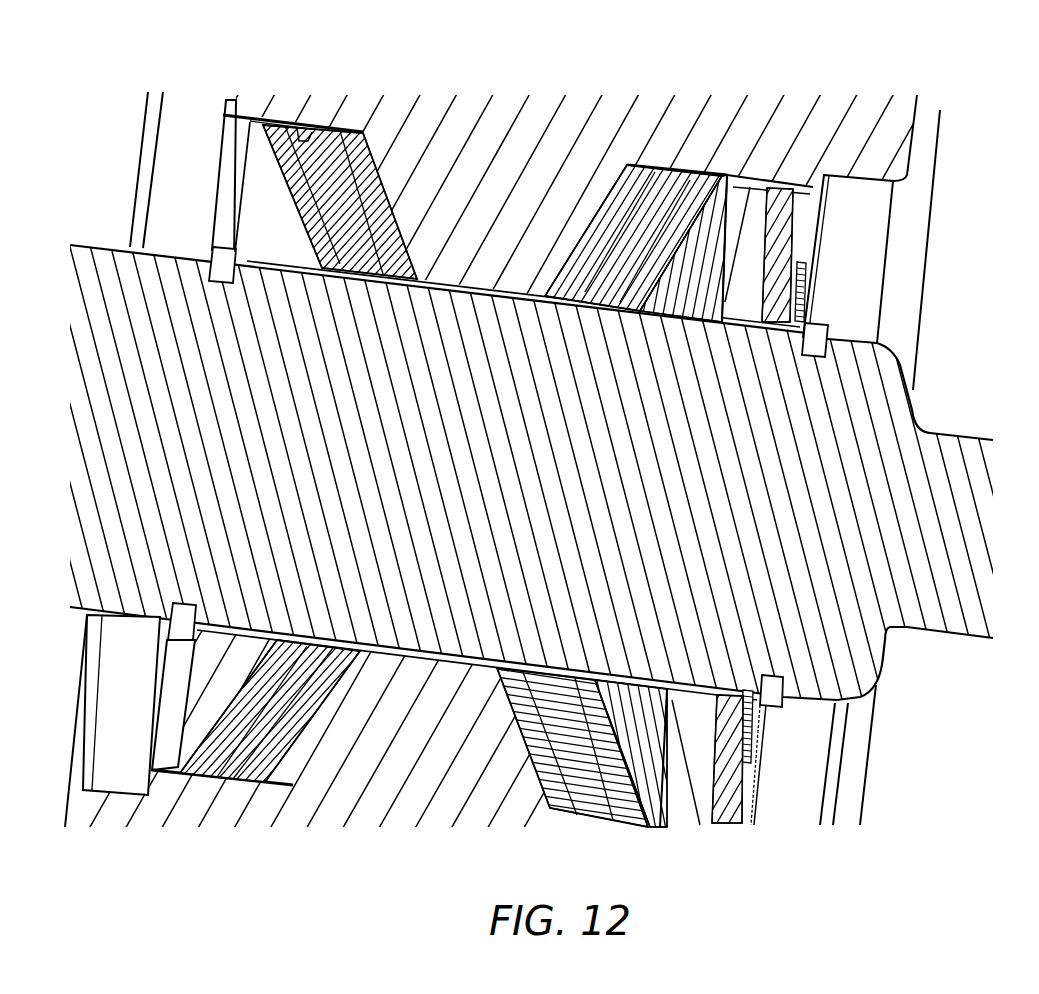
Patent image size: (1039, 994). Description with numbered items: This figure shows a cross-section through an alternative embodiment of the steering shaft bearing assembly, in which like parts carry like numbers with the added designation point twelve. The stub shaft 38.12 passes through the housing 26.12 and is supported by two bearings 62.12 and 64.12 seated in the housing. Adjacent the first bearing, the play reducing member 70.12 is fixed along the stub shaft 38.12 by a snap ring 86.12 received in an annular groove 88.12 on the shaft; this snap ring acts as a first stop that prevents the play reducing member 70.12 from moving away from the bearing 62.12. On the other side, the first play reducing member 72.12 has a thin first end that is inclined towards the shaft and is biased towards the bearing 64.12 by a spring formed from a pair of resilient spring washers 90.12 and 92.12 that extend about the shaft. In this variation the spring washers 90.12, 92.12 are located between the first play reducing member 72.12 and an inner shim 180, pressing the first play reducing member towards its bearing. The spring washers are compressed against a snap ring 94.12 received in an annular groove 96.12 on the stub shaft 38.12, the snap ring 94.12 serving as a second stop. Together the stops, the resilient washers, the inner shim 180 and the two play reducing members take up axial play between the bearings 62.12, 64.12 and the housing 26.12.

The housing 26.12 is at (303, 790).
The stub shaft 38.12 is at (438, 612).
The bearing 62.12 is at (318, 106).
The bearing 64.12 is at (672, 156).
The play reducing member 70.12 is at (262, 113).
The first play reducing member 72.12 is at (738, 178).
The snap ring 86.12 is at (238, 277).
The annular groove 88.12 is at (223, 283).
The spring washer 90.12 is at (733, 313).
The spring washer 92.12 is at (782, 312).
The snap ring 94.12 is at (825, 342).
The annular groove 96.12 is at (817, 357).
The inner shim 180 is at (806, 263).